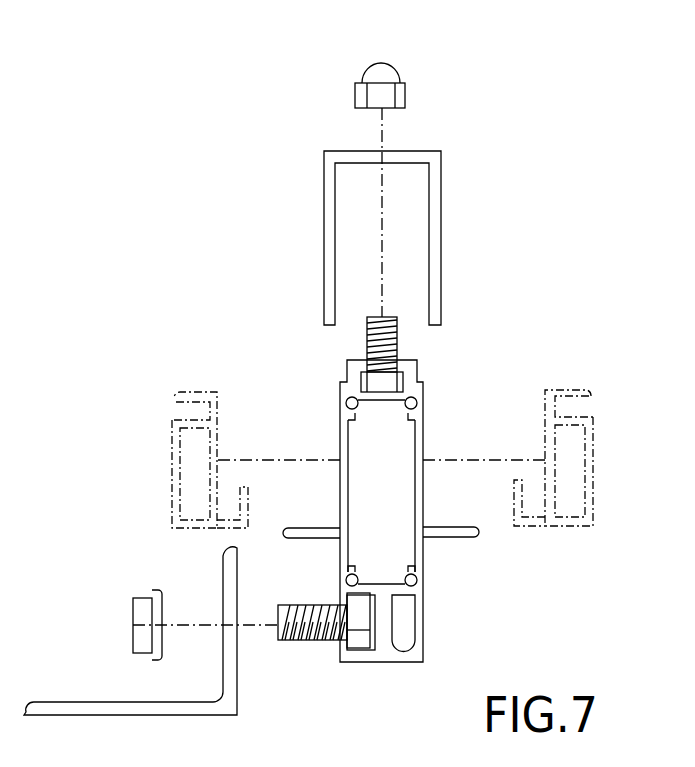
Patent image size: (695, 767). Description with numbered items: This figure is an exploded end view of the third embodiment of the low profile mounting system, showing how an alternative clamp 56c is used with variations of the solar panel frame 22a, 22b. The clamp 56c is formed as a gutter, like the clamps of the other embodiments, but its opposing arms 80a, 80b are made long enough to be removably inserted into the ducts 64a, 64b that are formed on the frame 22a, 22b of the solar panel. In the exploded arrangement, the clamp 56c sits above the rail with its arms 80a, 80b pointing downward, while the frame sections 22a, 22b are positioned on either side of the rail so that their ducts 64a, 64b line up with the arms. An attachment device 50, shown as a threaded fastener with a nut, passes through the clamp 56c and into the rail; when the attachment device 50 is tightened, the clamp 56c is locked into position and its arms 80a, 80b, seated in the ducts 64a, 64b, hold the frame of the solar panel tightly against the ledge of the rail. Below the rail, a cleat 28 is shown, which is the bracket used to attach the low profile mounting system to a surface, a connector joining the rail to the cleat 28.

The attachment device 50 is at (320, 123).
The clamp 56c is at (420, 150).
The opposing arm 80b is at (327, 237).
The opposing arm 80a is at (440, 223).
The frame 22b is at (172, 440).
The frame 22a is at (592, 433).
The duct 64b is at (228, 497).
The duct 64a is at (535, 483).
The cleat 28 is at (75, 703).